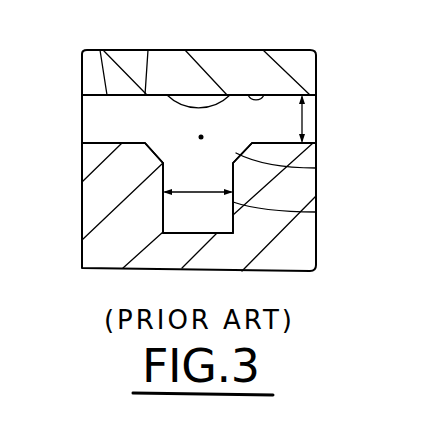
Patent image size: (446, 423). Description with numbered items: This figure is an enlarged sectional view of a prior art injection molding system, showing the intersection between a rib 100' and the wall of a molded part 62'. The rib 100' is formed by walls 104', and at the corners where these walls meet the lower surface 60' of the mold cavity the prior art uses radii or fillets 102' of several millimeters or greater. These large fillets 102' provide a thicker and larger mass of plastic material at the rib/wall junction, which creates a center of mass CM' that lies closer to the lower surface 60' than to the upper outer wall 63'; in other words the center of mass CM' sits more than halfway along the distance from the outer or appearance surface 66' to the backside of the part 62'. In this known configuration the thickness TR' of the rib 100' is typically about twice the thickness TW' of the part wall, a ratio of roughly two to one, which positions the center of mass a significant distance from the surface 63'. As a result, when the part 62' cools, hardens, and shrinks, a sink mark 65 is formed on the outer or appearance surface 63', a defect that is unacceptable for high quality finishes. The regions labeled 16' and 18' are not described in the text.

The upper layer 16' is at (238, 66).
The substrate / lower body 18' is at (235, 207).
The lower surface of the mold cavity 60' is at (54, 159).
The molded part 62' is at (149, 61).
The upper outer wall 63' is at (281, 54).
The sink mark 65 is at (215, 95).
The outer or appearance surface 66' is at (73, 56).
The rib 100' is at (176, 198).
The radii or fillets 102' is at (319, 165).
The walls 104' is at (317, 207).
The center of mass CM' is at (234, 125).
The thickness of the wall TW' is at (342, 119).
The thickness of the rib TR' is at (198, 179).